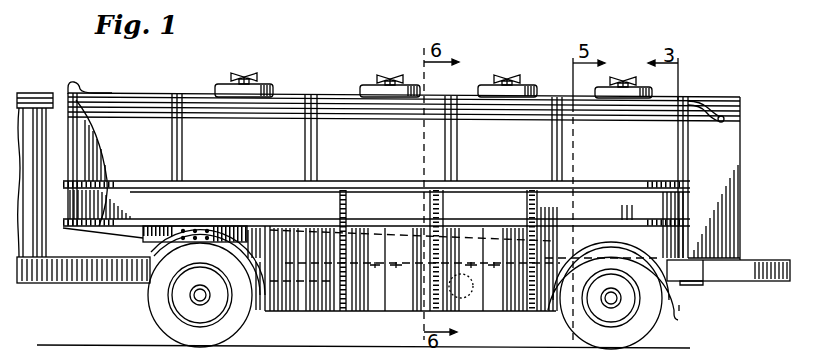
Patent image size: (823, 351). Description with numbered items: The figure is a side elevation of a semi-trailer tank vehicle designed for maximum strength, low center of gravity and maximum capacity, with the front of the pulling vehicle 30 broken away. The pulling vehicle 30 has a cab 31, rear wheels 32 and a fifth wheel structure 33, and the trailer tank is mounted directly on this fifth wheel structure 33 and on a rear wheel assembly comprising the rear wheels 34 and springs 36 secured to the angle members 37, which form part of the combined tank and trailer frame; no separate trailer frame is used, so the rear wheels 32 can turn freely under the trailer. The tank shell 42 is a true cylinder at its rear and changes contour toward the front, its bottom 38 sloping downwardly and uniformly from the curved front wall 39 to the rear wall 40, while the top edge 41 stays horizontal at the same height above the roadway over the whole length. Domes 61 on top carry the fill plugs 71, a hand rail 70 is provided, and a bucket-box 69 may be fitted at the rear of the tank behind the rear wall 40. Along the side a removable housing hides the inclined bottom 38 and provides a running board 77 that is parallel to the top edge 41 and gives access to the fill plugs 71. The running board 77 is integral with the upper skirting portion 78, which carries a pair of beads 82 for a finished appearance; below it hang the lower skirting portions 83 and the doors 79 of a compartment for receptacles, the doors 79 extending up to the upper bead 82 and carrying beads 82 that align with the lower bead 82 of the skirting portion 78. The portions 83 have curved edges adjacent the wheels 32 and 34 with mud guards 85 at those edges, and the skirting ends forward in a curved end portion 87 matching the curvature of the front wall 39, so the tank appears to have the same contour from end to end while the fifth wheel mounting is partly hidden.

The pulling vehicle 30 is at (108, 275).
The cab 31 is at (40, 97).
The rear wheels 32 is at (233, 318).
The fifth wheel structure 33 is at (175, 240).
The rear wheels 34 is at (573, 318).
The springs 36 is at (658, 326).
The angle members 37 is at (658, 270).
The bottom 38 is at (461, 286).
The front wall 39 is at (82, 147).
The rear wall 40 is at (683, 155).
The top edge 41 is at (292, 96).
The shell portion 42 is at (113, 100).
The domes 61 is at (270, 84).
The bucket-box 69 is at (722, 202).
The hand rail 70 is at (350, 78).
The fill plugs 71 is at (245, 68).
The running board 77 is at (483, 182).
The upper skirting portion 78 is at (238, 197).
The doors 79 is at (398, 300).
The beads 82 is at (352, 183).
The lower skirting portions 83 is at (537, 223).
The mud guards 85 is at (263, 260).
The curved forward end portion 87 is at (78, 198).